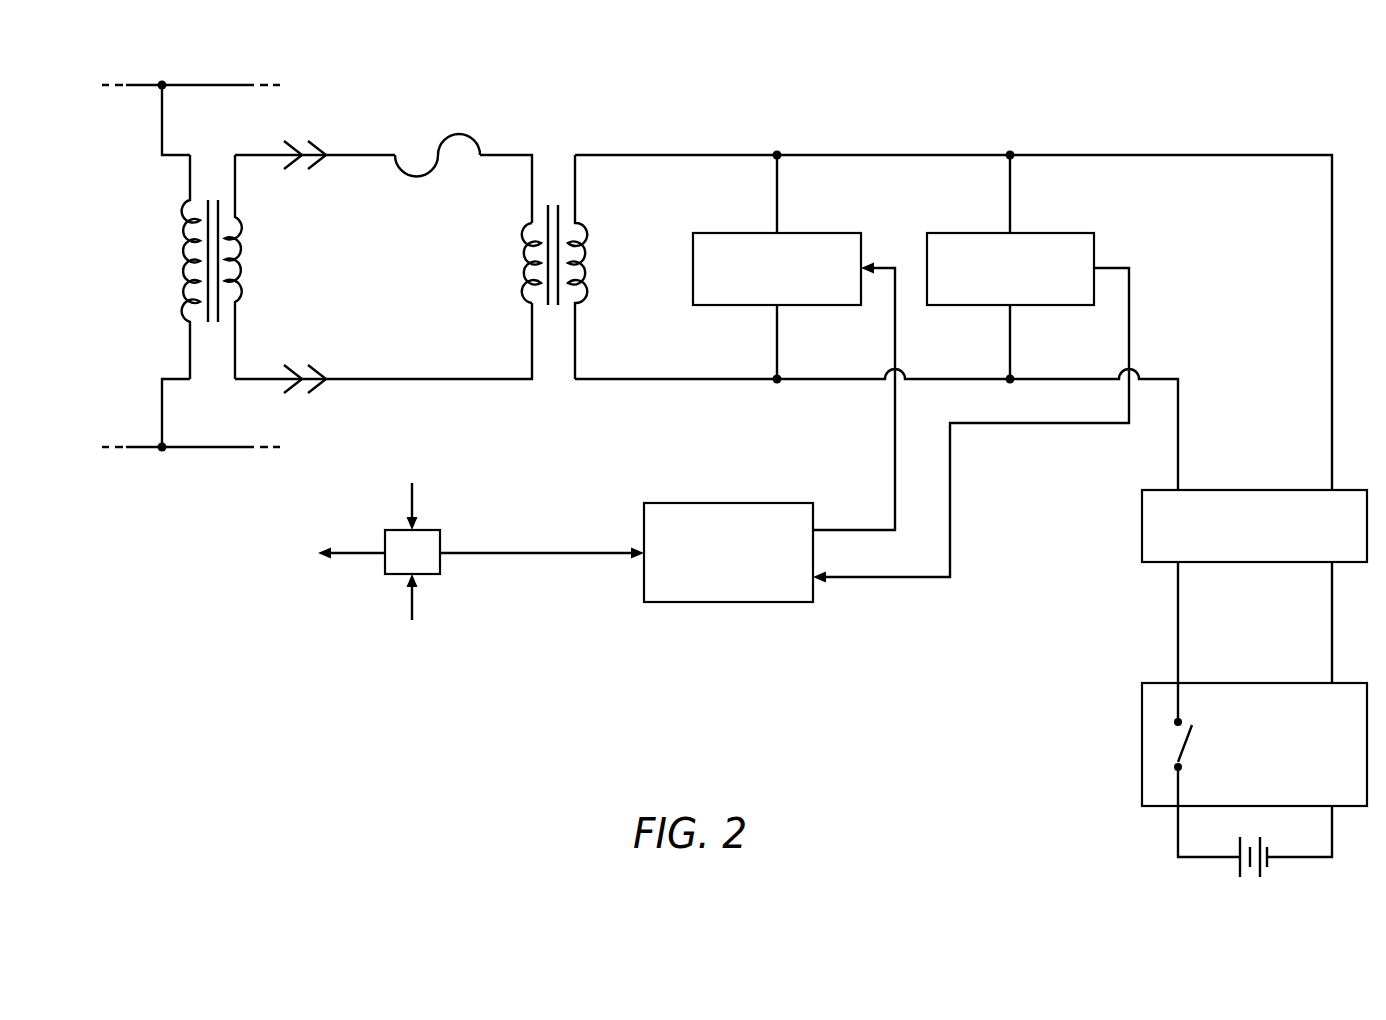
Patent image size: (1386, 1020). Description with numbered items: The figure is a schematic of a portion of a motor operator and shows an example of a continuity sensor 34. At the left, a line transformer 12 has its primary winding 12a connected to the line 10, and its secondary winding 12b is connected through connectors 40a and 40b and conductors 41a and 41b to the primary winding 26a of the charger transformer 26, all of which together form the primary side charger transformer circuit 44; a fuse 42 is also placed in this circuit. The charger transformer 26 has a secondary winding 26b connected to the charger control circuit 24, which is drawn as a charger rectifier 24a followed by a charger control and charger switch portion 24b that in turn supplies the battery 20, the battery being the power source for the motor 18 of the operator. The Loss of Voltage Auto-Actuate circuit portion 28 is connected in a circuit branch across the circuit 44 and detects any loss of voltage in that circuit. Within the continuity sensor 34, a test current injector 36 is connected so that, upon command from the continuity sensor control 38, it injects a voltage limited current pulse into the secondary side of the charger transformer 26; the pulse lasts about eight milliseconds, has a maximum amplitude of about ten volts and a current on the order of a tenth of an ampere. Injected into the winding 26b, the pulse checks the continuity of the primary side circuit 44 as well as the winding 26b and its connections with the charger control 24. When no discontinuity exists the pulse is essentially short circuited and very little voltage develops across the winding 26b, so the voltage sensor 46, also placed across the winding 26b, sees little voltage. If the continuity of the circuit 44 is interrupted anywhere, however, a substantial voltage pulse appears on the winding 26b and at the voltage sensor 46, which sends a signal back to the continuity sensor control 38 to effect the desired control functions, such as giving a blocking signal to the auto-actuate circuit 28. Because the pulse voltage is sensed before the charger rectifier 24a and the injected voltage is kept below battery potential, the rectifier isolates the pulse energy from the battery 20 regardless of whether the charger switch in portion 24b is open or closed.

The line 10 is at (213, 85).
The line transformer 12 is at (216, 247).
The primary winding 12a is at (183, 258).
The secondary winding 12b is at (244, 258).
The motor 18 is at (319, 553).
The battery 20 is at (1268, 868).
The charger control circuit 24 is at (1217, 648).
The charger rectifier 24a is at (1142, 525).
The charger control and charger switch portion 24b is at (1142, 720).
The charger transformer 26 is at (552, 249).
The primary winding 26a is at (523, 256).
The secondary winding 26b is at (583, 256).
The Loss of Voltage Auto-Actuate circuit portion 28 is at (504, 553).
The continuity sensor 34 is at (935, 481).
The test current injector 36 is at (818, 233).
The continuity sensor control 38 is at (757, 602).
The connector 40a is at (320, 166).
The connector 40b is at (320, 372).
The conductor 41a is at (383, 158).
The conductor 41b is at (383, 360).
The fuse 42 is at (460, 133).
The primary side charger transformer circuit 44 is at (383, 256).
The voltage sensor 46 is at (1058, 233).